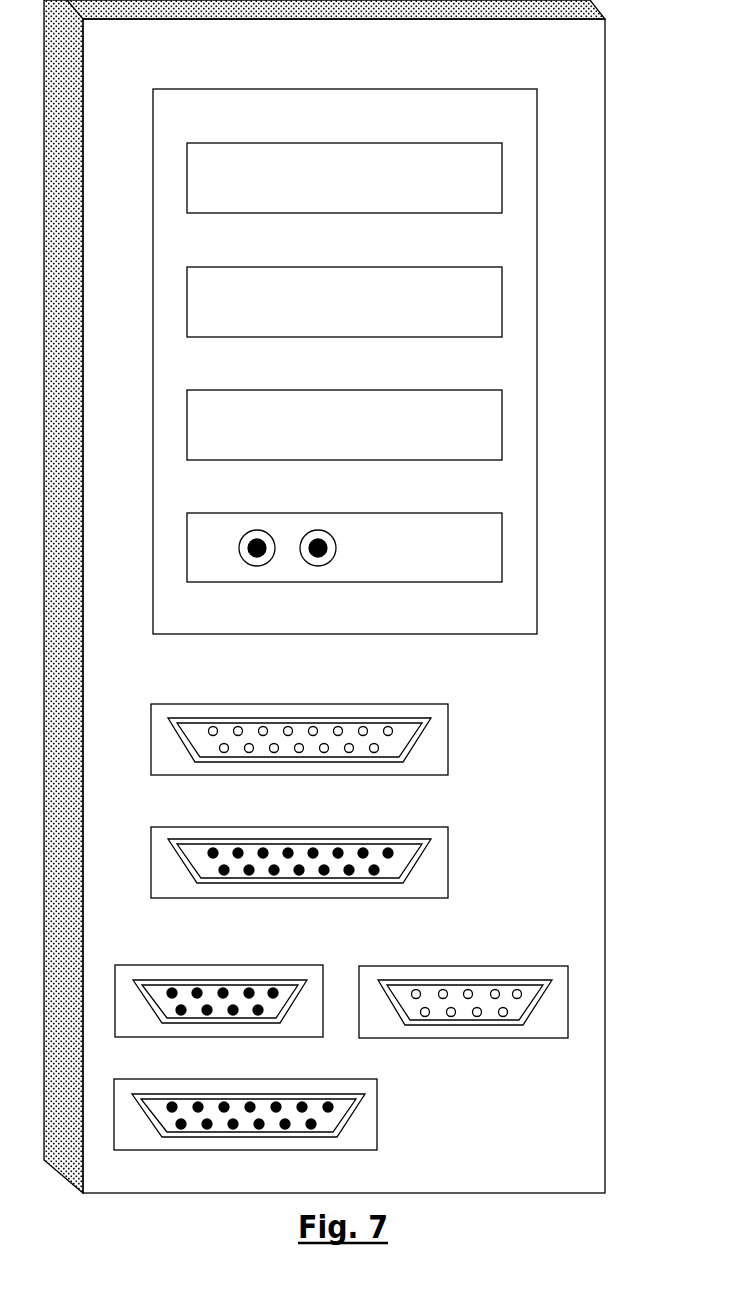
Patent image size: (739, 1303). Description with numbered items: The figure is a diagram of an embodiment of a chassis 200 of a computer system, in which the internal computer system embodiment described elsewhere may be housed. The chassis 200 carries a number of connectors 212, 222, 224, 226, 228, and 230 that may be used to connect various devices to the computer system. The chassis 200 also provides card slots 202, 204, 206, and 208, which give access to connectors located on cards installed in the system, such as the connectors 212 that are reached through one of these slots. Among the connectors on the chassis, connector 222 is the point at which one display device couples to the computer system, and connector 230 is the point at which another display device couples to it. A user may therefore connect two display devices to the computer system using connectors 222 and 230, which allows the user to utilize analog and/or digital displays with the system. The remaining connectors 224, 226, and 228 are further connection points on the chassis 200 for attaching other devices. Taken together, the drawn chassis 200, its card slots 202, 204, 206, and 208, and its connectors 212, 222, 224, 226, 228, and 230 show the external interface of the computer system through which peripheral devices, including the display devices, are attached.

The chassis 200 is at (605, 1108).
The card slot 202 is at (398, 585).
The card slot 204 is at (398, 462).
The card slot 206 is at (398, 339).
The card slot 208 is at (398, 215).
The connectors 212 is at (336, 556).
The connector 222 is at (228, 1038).
The connector 224 is at (465, 1039).
The connector 226 is at (300, 899).
The connector 228 is at (300, 777).
The connector 230 is at (238, 1151).